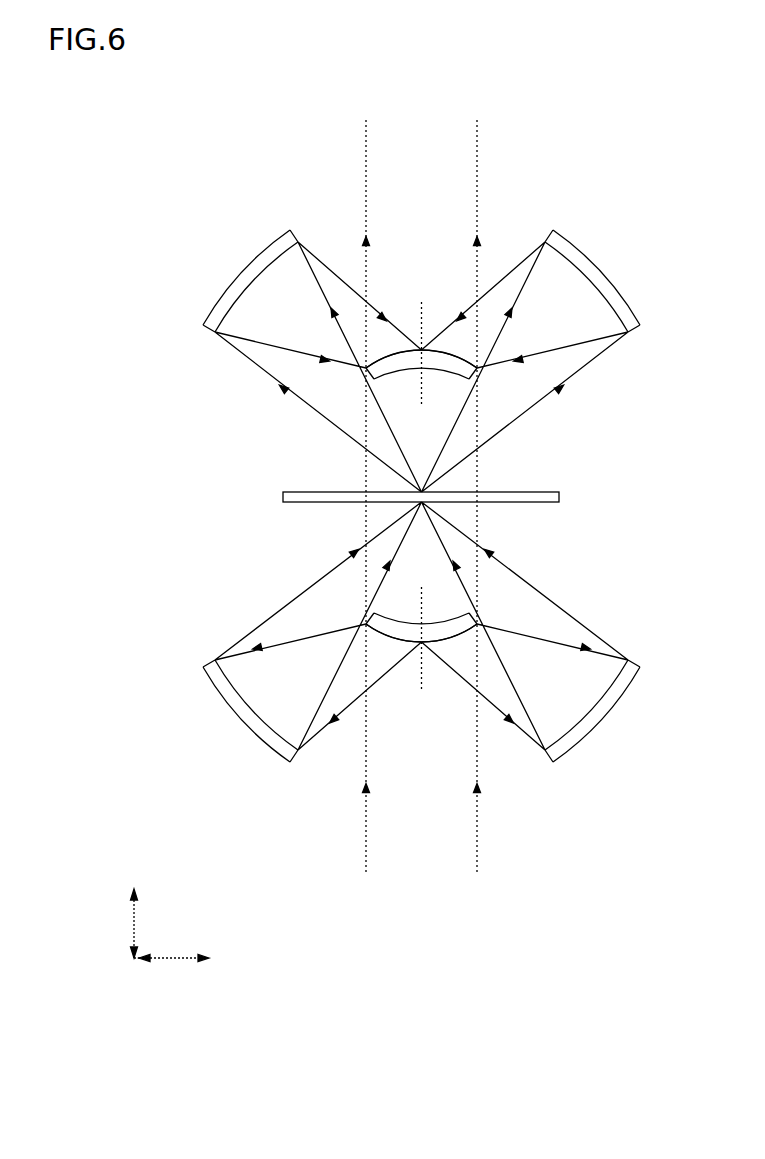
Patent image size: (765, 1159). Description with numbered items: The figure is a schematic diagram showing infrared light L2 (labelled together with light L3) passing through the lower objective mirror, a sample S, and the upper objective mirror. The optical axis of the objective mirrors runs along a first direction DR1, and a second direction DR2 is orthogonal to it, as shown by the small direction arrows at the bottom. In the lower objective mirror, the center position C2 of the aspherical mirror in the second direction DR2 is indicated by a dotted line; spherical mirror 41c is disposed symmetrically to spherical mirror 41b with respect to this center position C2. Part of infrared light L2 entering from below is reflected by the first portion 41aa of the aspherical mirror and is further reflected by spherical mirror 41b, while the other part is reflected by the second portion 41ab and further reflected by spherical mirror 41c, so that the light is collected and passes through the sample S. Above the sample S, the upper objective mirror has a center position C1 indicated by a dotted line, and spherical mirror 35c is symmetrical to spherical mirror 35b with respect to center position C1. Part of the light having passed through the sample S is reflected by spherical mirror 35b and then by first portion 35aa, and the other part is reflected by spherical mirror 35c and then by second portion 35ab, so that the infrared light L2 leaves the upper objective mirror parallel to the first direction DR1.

The spherical mirror 35b is at (235, 287).
The spherical mirror 35c is at (608, 287).
The first portion 35aa is at (372, 380).
The second portion 35ab is at (471, 380).
The spherical mirror 41b is at (232, 708).
The spherical mirror 41c is at (611, 708).
The first portion 41aa is at (372, 612).
The second portion 41ab is at (471, 612).
The sample S is at (285, 492).
The center position C1 is at (421, 366).
The center position C2 is at (421, 628).
The infrared light L2 is at (392, 496).
The third light beam L3 is at (429, 496).
The first direction DR1 is at (115, 923).
The second direction DR2 is at (171, 974).